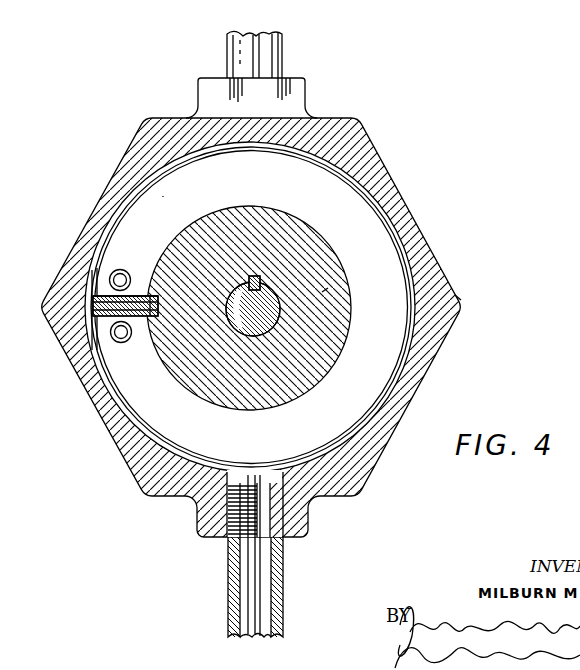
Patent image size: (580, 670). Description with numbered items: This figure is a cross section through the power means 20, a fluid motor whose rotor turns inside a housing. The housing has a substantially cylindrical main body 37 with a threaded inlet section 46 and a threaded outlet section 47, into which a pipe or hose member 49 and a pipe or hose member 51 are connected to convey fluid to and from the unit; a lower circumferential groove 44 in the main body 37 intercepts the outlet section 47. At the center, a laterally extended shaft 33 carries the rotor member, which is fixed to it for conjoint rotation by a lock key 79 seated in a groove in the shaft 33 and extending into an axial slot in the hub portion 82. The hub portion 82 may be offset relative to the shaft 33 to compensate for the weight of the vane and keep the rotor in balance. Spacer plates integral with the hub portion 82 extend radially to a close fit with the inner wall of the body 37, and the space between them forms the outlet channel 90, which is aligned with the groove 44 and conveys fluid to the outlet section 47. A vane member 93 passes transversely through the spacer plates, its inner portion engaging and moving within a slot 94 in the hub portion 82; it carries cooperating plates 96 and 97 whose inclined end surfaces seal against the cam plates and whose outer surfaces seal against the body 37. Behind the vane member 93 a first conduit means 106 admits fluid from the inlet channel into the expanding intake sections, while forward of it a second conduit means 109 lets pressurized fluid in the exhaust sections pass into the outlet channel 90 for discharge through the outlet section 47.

The power means 20 is at (410, 193).
The shaft 33 is at (326, 290).
The main body 37 is at (465, 305).
The circumferential groove 44 is at (178, 150).
The inlet section 46 is at (298, 96).
The outlet section 47 is at (310, 533).
The pipe or hose member 49 is at (270, 56).
The pipe or hose member 51 is at (280, 588).
The lock key 79 is at (258, 280).
The hub portion 82 is at (300, 290).
The outlet channel 90 is at (163, 196).
The vane member 93 is at (110, 347).
The slot 94 is at (111, 273).
The cooperating plate 96 is at (90, 338).
The cooperating plate 97 is at (106, 298).
The first conduit means 106 is at (146, 291).
The second conduit means 109 is at (97, 345).